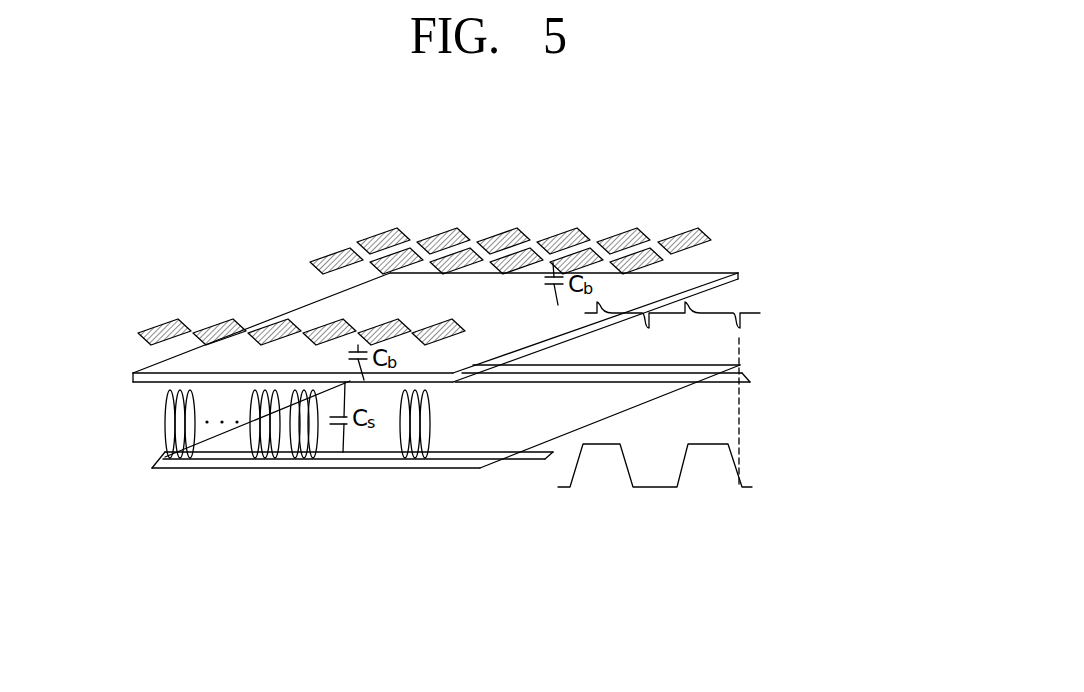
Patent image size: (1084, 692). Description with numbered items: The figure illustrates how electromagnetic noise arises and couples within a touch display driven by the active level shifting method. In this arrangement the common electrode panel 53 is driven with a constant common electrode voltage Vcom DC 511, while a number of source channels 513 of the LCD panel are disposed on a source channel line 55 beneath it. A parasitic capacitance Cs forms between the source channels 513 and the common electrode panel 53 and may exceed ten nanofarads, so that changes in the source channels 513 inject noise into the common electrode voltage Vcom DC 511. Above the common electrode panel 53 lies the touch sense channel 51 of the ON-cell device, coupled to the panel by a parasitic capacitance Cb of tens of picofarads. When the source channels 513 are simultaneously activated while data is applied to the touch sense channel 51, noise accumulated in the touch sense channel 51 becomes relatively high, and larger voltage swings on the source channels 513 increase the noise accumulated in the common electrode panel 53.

The touch sense channel 51 is at (705, 224).
The common electrode voltage Vcom DC 511 is at (722, 313).
The common electrode panel 53 is at (133, 382).
The source channel 513 is at (742, 425).
The source channel line 55 is at (165, 457).